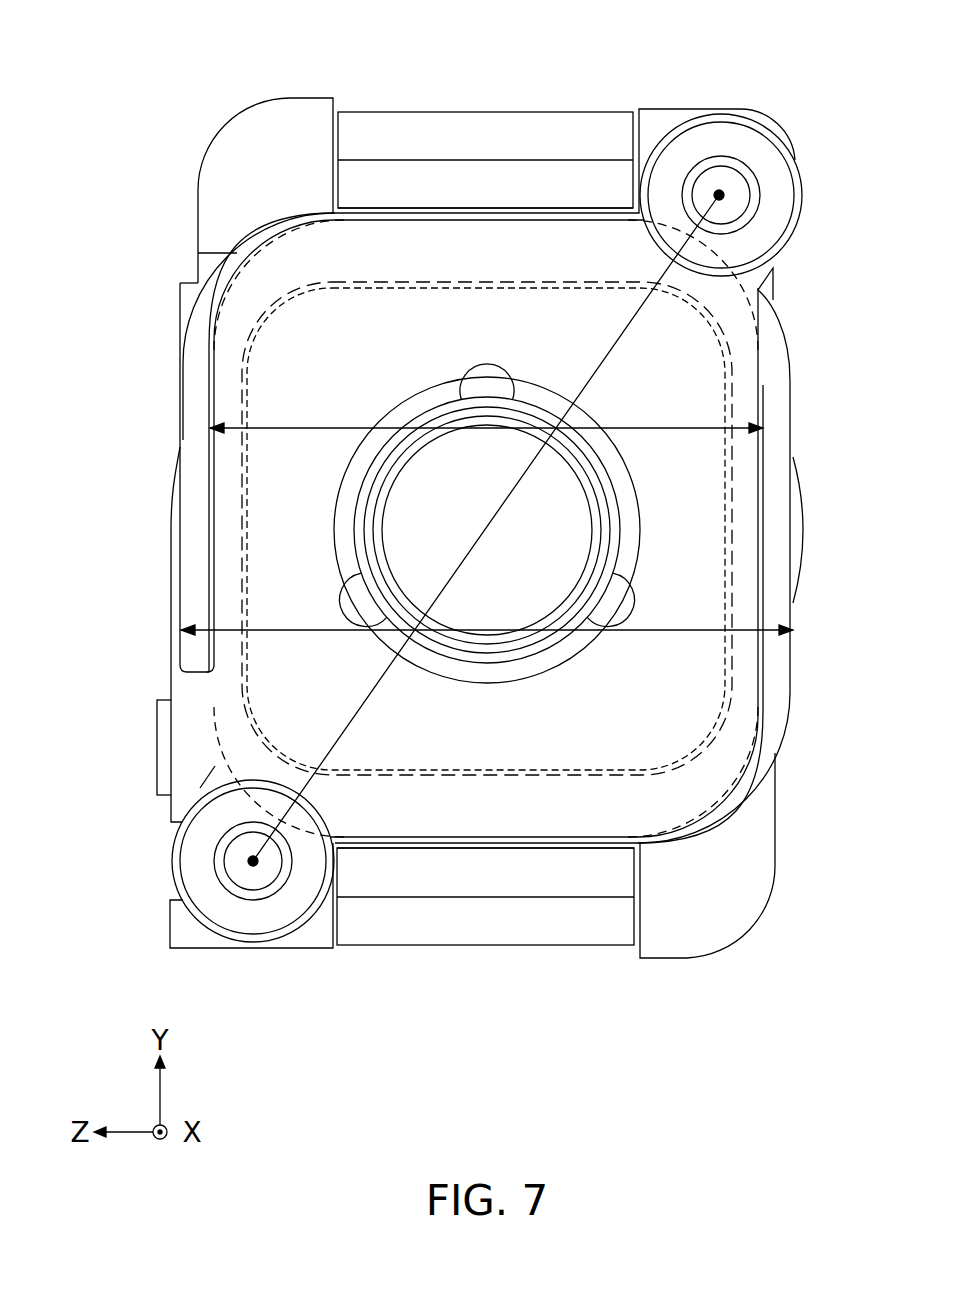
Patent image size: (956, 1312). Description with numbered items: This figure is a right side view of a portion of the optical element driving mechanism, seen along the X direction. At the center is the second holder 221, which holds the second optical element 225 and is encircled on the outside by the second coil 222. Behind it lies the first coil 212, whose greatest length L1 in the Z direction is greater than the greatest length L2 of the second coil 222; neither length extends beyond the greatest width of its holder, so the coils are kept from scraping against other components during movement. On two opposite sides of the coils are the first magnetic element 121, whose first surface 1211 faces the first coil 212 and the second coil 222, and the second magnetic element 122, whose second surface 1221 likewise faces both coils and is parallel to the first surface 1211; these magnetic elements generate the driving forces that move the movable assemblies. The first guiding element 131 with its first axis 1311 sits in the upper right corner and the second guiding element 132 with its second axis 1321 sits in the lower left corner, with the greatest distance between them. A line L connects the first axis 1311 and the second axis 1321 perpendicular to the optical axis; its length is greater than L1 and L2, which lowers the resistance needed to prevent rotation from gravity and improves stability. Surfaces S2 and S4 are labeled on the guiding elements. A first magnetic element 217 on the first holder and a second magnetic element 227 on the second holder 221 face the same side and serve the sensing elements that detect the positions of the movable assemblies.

The first magnetic element 121 is at (418, 124).
The first surface 1211 is at (516, 207).
The second magnetic element 122 is at (534, 932).
The second surface 1221 is at (424, 852).
The first guiding element 131 is at (737, 185).
The first axis 1311 is at (725, 185).
The second guiding element 132 is at (235, 872).
The second axis 1321 is at (247, 857).
The second positioning surface S2 is at (683, 123).
The fourth positioning surface S4 is at (207, 800).
The first coil 212 is at (190, 655).
The first magnetic element 217 is at (185, 299).
The second holder 221 is at (278, 485).
The second coil 222 is at (208, 408).
The second optical element 225 is at (427, 533).
The second magnetic element 227 is at (164, 732).
The line L is at (486, 528).
The greatest length of the first coil L1 is at (487, 615).
The greatest length of the second coil L2 is at (486, 413).